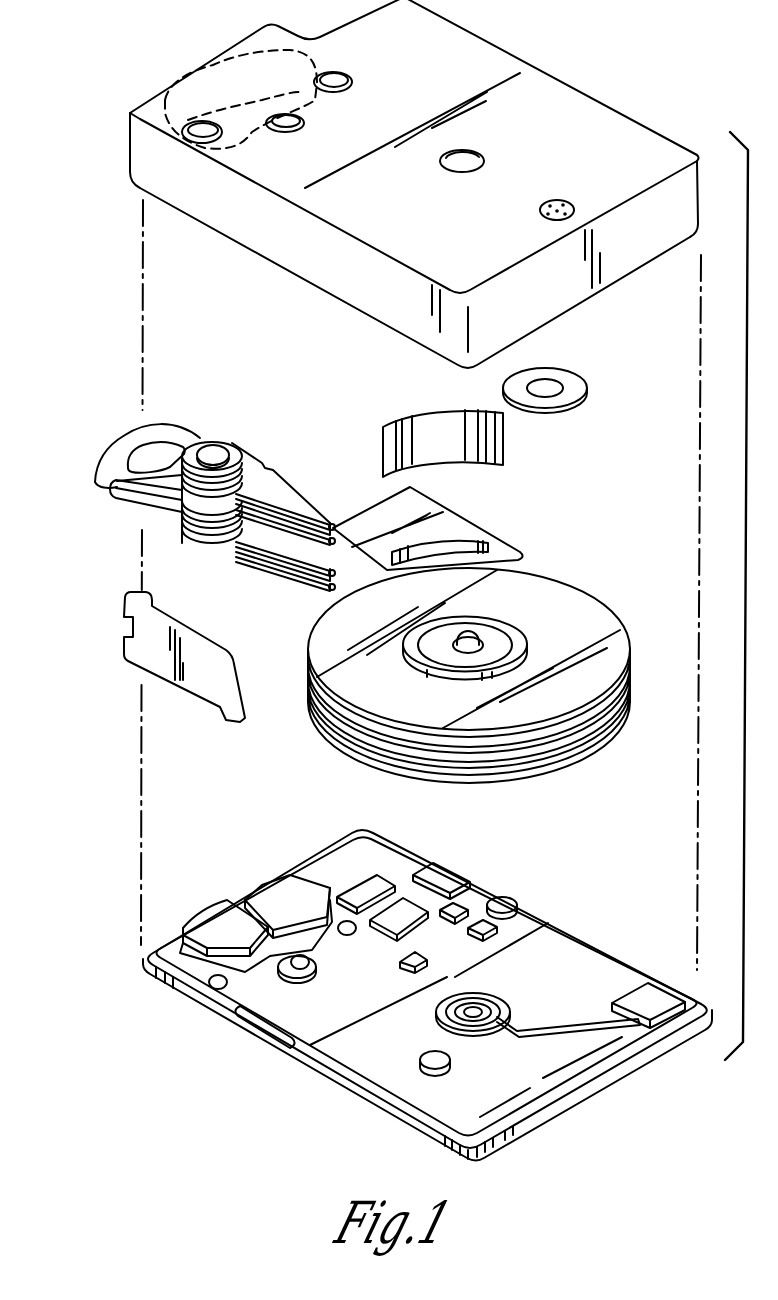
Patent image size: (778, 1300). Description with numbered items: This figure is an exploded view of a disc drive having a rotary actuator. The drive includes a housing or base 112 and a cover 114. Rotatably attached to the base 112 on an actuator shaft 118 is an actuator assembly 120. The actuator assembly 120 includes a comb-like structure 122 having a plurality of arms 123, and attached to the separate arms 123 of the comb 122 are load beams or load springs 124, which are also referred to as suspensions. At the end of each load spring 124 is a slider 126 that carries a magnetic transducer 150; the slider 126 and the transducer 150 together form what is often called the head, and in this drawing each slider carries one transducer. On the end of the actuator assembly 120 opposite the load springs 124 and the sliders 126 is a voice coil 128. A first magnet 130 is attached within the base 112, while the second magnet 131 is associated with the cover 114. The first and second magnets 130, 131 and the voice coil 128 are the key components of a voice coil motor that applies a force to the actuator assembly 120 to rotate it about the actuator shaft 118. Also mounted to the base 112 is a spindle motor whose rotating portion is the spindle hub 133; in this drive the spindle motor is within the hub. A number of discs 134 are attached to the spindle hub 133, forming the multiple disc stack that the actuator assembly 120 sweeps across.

The base 112 is at (597, 967).
The cover 114 is at (582, 118).
The actuator shaft 118 is at (215, 448).
The actuator assembly 120 is at (163, 501).
The comb-like structure 122 is at (237, 560).
The arms 123 is at (262, 463).
The load beams or load springs 124 is at (287, 495).
The slider 126 is at (333, 524).
The voice coil 128 is at (118, 455).
The first magnet 130 is at (242, 62).
The second magnet 131 is at (208, 922).
The spindle hub 133 is at (472, 637).
The discs 134 is at (595, 620).
The magnetic transducer 150 is at (337, 528).